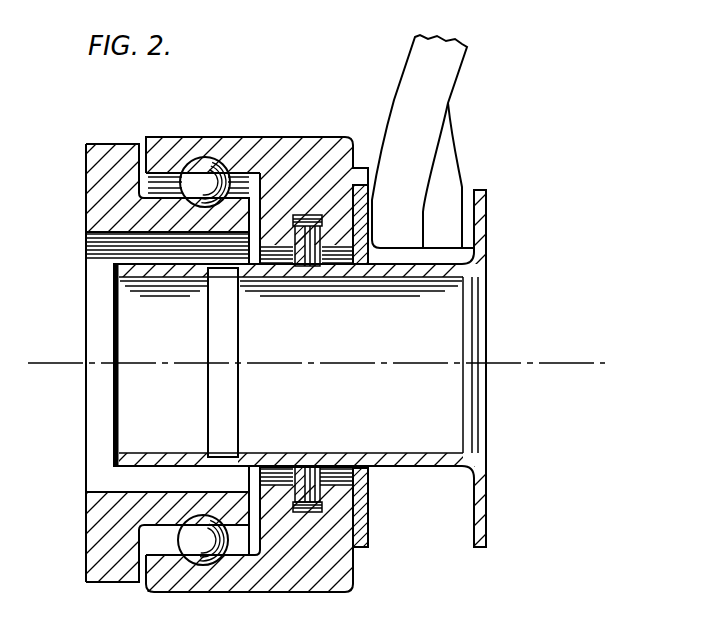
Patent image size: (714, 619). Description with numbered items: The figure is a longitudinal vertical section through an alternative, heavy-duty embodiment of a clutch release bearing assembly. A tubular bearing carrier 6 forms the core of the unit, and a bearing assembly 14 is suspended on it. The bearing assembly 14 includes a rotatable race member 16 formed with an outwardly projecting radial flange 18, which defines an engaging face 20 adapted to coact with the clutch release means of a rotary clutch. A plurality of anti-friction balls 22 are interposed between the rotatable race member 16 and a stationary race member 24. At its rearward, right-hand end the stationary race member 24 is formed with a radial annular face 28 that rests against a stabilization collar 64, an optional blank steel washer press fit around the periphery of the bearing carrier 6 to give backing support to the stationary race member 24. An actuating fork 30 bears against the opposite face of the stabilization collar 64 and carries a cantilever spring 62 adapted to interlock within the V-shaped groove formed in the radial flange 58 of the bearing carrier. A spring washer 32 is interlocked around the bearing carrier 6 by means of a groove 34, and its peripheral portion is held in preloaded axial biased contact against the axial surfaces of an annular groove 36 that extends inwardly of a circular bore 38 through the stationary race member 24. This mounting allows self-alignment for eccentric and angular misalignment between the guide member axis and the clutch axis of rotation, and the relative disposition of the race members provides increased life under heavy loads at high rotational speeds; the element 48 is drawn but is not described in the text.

The tubular bearing carrier 6 is at (395, 455).
The bearing assembly 14 is at (245, 132).
The rotatable race member 16 is at (95, 218).
The radial flange 18 is at (110, 160).
The engaging face 20 is at (86, 180).
The balls 22 is at (205, 167).
The stationary race member 24 is at (297, 148).
The radial annular face 28 is at (371, 168).
The actuating fork 30 is at (402, 113).
The spring washer 32 is at (317, 478).
The groove 34 is at (327, 263).
The annular groove 36 is at (312, 213).
The circular bore 38 is at (282, 247).
The plunger 48 is at (236, 345).
The radial flange 58 is at (480, 497).
The cantilever spring 62 is at (457, 177).
The stabilization collar 64 is at (359, 518).